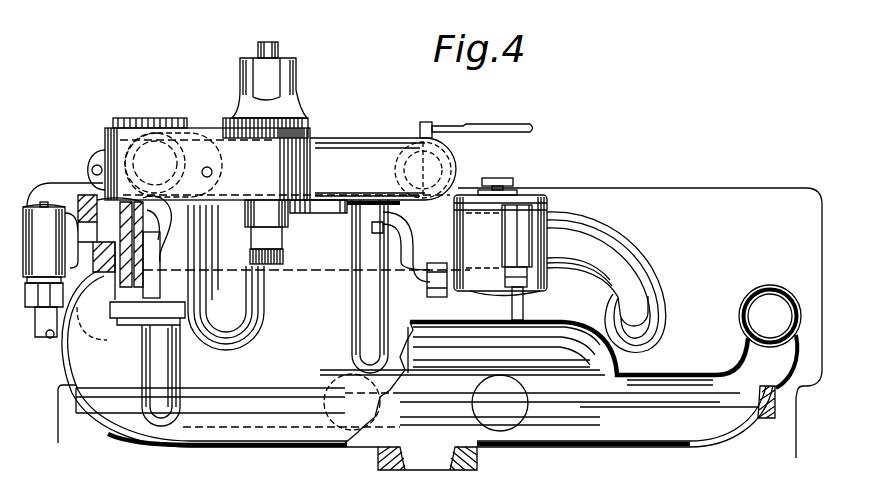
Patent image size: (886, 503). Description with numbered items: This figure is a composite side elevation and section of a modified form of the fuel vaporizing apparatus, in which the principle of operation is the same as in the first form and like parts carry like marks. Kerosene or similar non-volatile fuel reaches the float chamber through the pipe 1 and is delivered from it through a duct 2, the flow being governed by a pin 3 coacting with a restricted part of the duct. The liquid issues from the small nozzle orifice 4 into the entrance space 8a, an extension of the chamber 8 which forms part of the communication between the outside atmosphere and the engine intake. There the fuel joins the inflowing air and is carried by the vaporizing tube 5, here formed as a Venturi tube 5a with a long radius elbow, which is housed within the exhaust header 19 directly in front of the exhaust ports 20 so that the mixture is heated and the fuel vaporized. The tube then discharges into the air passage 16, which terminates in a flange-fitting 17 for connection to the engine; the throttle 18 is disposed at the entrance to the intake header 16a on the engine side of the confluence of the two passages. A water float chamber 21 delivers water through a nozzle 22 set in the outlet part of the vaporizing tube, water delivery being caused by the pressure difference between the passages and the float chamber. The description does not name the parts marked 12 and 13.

The pipe 1 is at (43, 337).
The duct 2 is at (155, 232).
The pin 3 is at (108, 312).
The nozzle orifice 4 is at (167, 205).
The vaporizing tube 5 is at (360, 247).
The Venturi tube 5a is at (458, 365).
The chamber 8 is at (227, 153).
The entrance space 8a is at (160, 280).
The nozzle fitting 12 is at (259, 265).
The valve 13 is at (285, 57).
The passage 16 is at (363, 150).
The intake header 16a is at (623, 237).
The flange-fitting 17 is at (100, 152).
The throttle 18 is at (433, 124).
The exhaust header 19 is at (670, 452).
The exhaust ports 20 is at (333, 315).
The float chamber 21 is at (550, 207).
The nozzle 22 is at (397, 243).